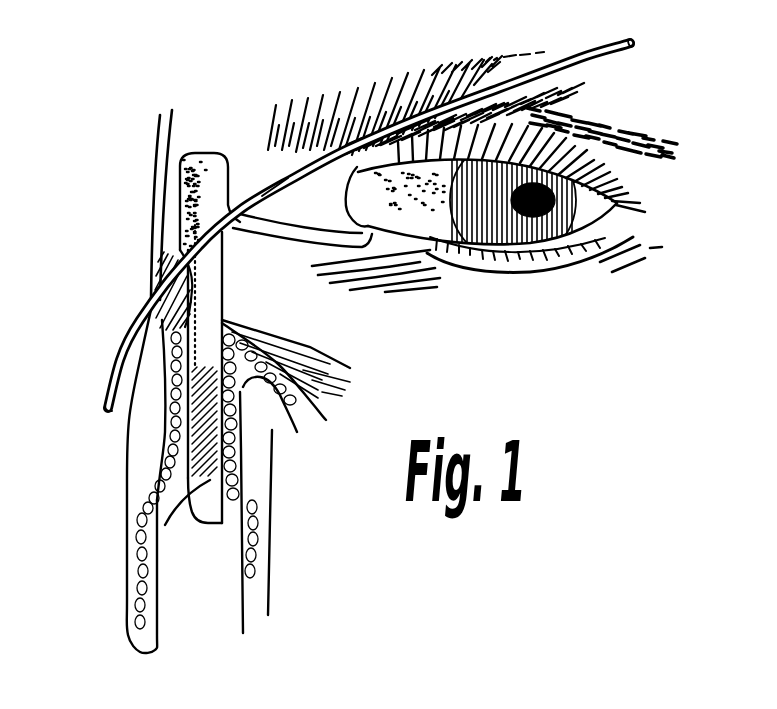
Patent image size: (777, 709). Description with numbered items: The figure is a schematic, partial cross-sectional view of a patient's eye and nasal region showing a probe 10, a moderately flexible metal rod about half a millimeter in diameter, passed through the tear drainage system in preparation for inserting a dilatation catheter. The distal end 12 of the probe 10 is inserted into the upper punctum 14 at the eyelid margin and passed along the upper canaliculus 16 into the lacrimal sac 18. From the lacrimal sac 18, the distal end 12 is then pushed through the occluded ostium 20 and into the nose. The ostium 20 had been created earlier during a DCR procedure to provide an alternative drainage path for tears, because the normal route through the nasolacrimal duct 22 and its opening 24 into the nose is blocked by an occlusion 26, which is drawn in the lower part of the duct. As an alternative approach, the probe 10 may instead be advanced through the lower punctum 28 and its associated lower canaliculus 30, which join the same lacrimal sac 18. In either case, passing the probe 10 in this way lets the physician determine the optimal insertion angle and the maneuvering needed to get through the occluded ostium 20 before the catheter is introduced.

The probe 10 is at (598, 44).
The distal end of the probe 12 is at (107, 420).
The upper punctum 14 is at (317, 140).
The upper canaliculus 16 is at (274, 182).
The lacrimal sac 18 is at (205, 152).
The occluded ostium 20 is at (150, 291).
The nasolacrimal duct 22 is at (225, 474).
The opening of the nasolacrimal duct 24 is at (216, 526).
The occlusion 26 is at (162, 438).
The lower punctum 28 is at (367, 230).
The lower canaliculus 30 is at (297, 248).